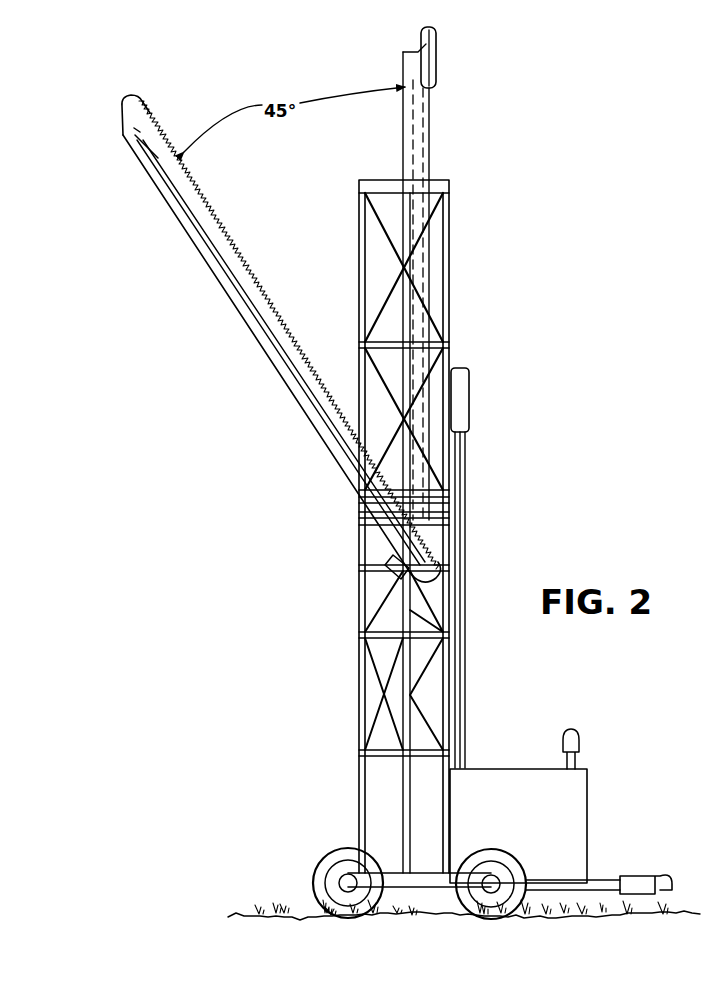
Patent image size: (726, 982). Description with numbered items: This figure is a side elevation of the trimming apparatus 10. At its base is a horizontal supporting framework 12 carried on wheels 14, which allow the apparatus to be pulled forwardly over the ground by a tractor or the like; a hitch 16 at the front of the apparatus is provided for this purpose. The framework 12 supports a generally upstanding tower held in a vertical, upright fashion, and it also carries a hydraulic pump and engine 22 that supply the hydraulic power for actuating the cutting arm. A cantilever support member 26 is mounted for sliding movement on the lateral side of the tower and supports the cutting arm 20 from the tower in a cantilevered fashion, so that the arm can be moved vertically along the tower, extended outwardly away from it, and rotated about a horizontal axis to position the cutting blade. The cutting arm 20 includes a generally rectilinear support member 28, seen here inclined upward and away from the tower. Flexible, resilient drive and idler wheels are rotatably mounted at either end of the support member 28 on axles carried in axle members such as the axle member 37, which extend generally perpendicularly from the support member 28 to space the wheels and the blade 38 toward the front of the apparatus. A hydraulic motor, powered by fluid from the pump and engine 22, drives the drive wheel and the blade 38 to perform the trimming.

The trimming apparatus 10 is at (497, 248).
The horizontal supporting framework 12 is at (598, 880).
The wheels 14 is at (328, 858).
The hitch 16 is at (640, 877).
The cutting arm 20 is at (256, 338).
The hydraulic pump and engine 22 is at (511, 794).
The cantilever support member 26 is at (360, 520).
The rectilinear support member 28 is at (235, 297).
The axle member 37 is at (128, 122).
The blade 38 is at (217, 233).